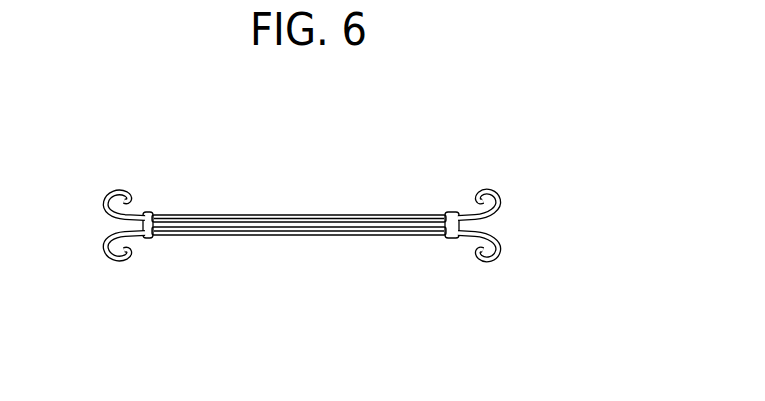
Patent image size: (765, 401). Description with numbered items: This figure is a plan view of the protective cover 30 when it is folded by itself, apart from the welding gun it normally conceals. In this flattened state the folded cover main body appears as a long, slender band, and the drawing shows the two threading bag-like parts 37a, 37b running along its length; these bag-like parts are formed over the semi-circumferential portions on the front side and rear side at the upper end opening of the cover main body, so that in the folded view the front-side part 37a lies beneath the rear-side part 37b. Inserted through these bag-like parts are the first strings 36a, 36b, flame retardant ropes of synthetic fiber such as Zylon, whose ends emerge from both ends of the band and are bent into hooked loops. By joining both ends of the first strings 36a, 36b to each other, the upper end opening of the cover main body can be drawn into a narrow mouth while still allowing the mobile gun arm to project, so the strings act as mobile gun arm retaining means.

The protective cover 30 is at (393, 195).
The threading bag-like part 37b is at (232, 213).
The threading bag-like part 37a is at (285, 237).
The first string 36b is at (499, 196).
The first string 36a is at (507, 241).